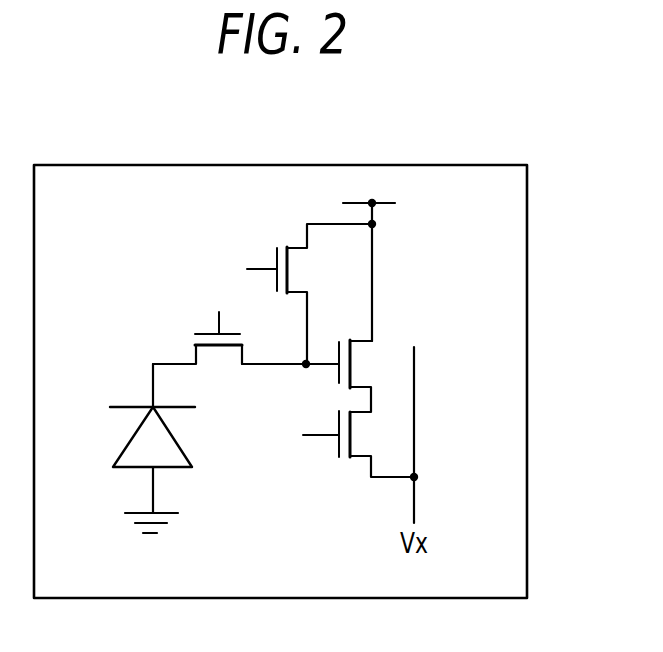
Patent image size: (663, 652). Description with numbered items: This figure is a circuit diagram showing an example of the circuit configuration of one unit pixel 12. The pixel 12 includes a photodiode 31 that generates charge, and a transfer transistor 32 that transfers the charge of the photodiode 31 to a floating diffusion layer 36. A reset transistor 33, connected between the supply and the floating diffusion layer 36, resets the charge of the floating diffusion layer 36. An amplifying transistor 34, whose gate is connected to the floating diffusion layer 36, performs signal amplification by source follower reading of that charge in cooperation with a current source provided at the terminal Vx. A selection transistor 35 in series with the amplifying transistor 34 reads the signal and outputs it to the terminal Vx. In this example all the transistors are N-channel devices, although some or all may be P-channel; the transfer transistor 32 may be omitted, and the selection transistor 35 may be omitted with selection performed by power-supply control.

The pixel 12 is at (518, 191).
The photodiode 31 is at (180, 460).
The transfer transistor 32 is at (193, 338).
The reset transistor 33 is at (300, 270).
The amplifying transistor 34 is at (362, 362).
The selection transistor 35 is at (362, 436).
The floating diffusion layer 36 is at (302, 368).